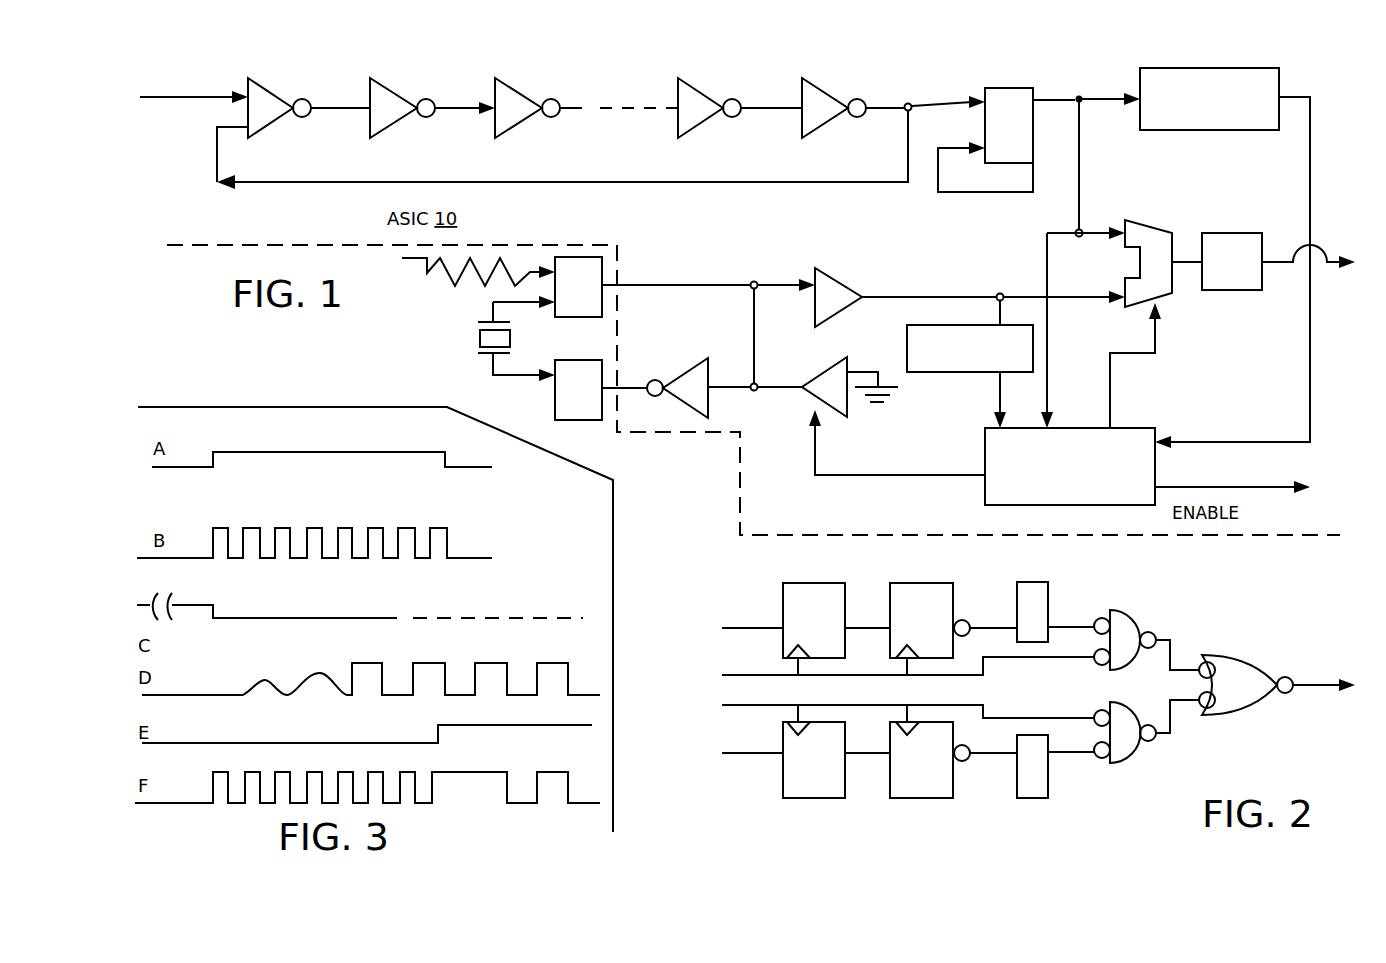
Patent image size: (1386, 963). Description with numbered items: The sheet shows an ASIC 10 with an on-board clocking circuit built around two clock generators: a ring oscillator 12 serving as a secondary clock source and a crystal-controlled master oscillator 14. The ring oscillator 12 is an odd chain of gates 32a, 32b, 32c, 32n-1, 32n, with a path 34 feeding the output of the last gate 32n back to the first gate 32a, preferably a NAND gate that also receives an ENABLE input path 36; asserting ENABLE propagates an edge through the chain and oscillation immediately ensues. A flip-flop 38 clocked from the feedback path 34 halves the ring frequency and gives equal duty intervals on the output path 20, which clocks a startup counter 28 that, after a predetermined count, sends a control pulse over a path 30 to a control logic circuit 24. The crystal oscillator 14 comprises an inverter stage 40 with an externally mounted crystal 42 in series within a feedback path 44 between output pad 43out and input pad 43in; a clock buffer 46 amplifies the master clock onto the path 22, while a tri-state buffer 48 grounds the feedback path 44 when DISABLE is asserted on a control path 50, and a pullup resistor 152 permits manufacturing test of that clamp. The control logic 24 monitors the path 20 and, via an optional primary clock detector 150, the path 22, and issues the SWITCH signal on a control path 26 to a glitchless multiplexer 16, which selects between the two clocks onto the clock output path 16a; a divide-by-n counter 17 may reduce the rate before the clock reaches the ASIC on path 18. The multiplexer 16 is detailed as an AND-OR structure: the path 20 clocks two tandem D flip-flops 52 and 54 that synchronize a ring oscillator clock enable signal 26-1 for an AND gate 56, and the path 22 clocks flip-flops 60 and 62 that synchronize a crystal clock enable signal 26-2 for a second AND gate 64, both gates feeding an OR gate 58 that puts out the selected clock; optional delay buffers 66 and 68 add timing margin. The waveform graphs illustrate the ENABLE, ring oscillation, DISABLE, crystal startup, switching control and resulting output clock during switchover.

In FIG. 1, the ASIC 10 is at (753, 390).
In FIG. 1, the ring oscillator 12 is at (722, 22).
In FIG. 1, the crystal oscillator 14 is at (693, 255).
In FIG. 1, the glitchless multiplexer 16 is at (1152, 235).
In FIG. 2, the glitchless multiplexer 16 is at (746, 797).
In FIG. 1, the clock output path 16a is at (1183, 262).
In FIG. 2, the clock output path 16a is at (1312, 685).
In FIG. 1, the divide-by-n counter 17 is at (1222, 233).
In FIG. 1, the clock output path 18 is at (1320, 250).
In FIG. 1, the ring oscillator output path 20 is at (1080, 188).
In FIG. 2, the ring oscillator output path 20 is at (893, 670).
In FIG. 1, the crystal oscillator output path 22 is at (950, 297).
In FIG. 2, the crystal oscillator output path 22 is at (893, 706).
In FIG. 1, the control logic circuit 24 is at (985, 455).
In FIG. 1, the control path 26 is at (1110, 410).
In FIG. 2, the ring oscillator clock enable signal 26-1 is at (730, 627).
In FIG. 2, the crystal clock enable signal 26-2 is at (730, 752).
In FIG. 1, the startup counter 28 is at (1227, 68).
In FIG. 1, the control pulse path 30 is at (1310, 315).
In FIG. 1, the first gate 32a is at (266, 104).
In FIG. 1, the gate 32b is at (382, 95).
In FIG. 1, the gate 32c is at (506, 95).
In FIG. 1, the gate 32n-1 is at (690, 95).
In FIG. 1, the last gate 32n is at (815, 90).
In FIG. 1, the feedback path 34 is at (372, 182).
In FIG. 1, the ENABLE input path 36 is at (193, 98).
In FIG. 1, the flip-flop 38 is at (1020, 88).
In FIG. 1, the inverter stage 40 is at (690, 378).
In FIG. 1, the crystal 42 is at (478, 344).
In FIG. 1, the input pad 43in is at (572, 297).
In FIG. 1, the output pad 43out is at (572, 400).
In FIG. 1, the feedback path 44 is at (754, 332).
In FIG. 1, the clock buffer 46 is at (876, 258).
In FIG. 1, the tri-state buffer 48 is at (830, 375).
In FIG. 1, the DISABLE control path 50 is at (850, 475).
In FIG. 2, the D flip-flop 52 is at (783, 600).
In FIG. 2, the D flip-flop 54 is at (953, 600).
In FIG. 2, the AND gate 56 is at (1135, 625).
In FIG. 2, the OR gate 58 is at (1262, 668).
In FIG. 2, the D flip-flop 60 is at (848, 785).
In FIG. 2, the D flip-flop 62 is at (953, 785).
In FIG. 2, the second AND gate 64 is at (1130, 760).
In FIG. 2, the delay buffer 66 is at (1048, 603).
In FIG. 2, the delay buffer 68 is at (1048, 772).
In FIG. 1, the primary clock detector 150 is at (975, 372).
In FIG. 1, the pullup resistor 152 is at (455, 280).